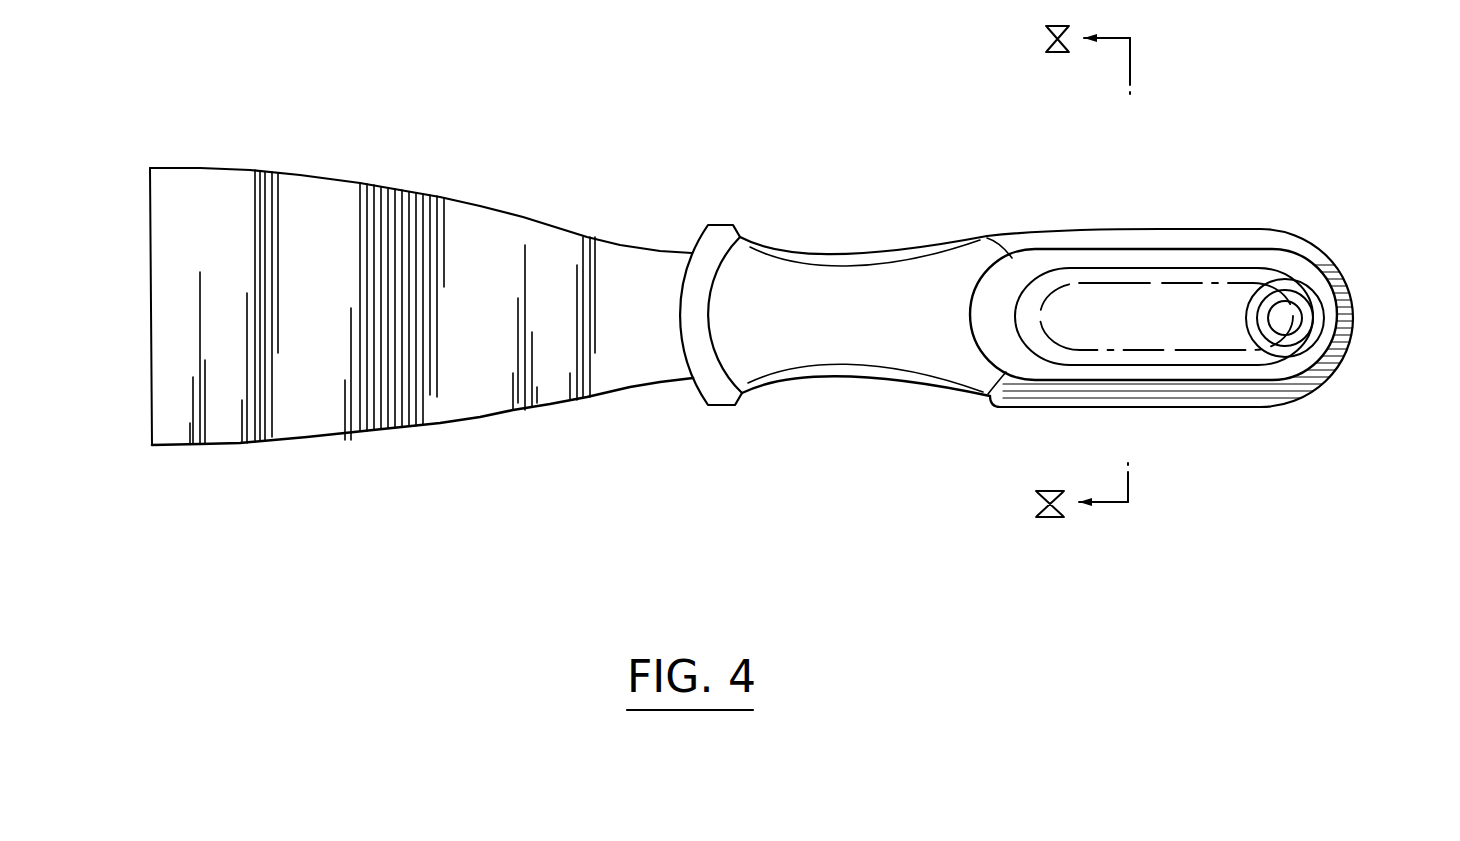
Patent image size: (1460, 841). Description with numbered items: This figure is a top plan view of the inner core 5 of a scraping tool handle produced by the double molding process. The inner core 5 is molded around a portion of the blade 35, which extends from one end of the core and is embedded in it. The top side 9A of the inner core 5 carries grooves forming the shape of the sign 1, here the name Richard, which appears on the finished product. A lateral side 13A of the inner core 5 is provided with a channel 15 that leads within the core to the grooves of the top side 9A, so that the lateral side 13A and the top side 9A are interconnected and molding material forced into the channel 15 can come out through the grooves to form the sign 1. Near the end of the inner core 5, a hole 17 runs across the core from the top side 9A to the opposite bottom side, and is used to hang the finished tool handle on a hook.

The blade 35 is at (322, 200).
The inner core 5 is at (1367, 234).
The lateral side 13A is at (1060, 228).
The channel 15 is at (1163, 240).
The top side 9A is at (1209, 304).
The sign 1 is at (1122, 312).
The hole 17 is at (1287, 318).